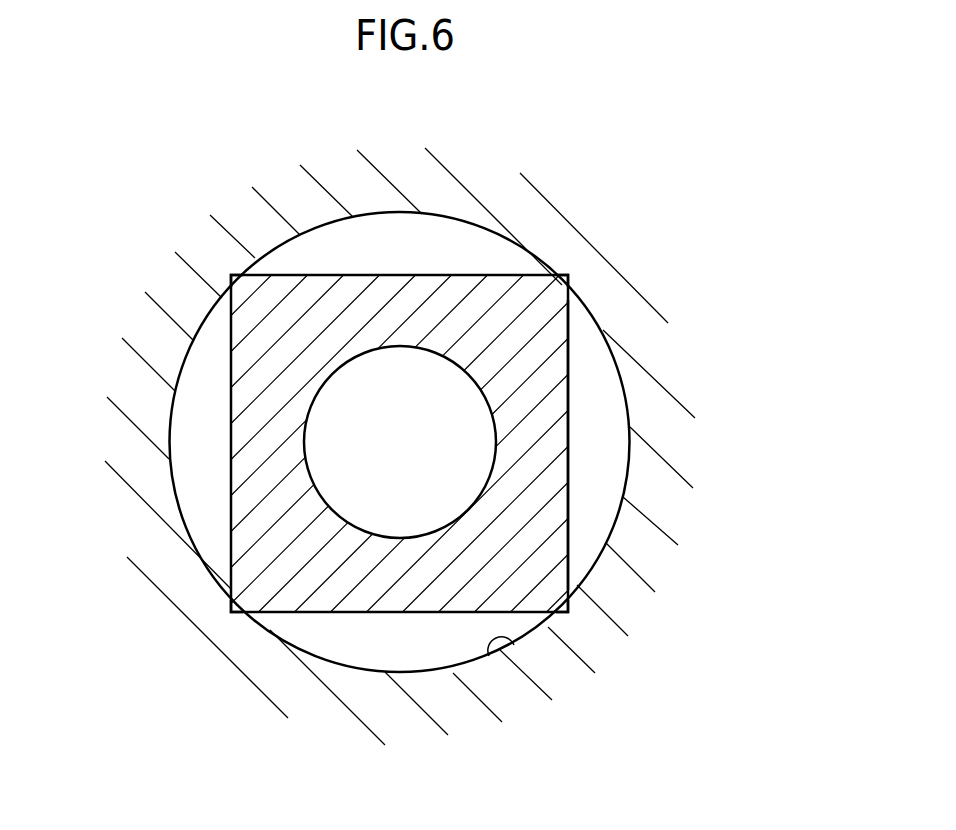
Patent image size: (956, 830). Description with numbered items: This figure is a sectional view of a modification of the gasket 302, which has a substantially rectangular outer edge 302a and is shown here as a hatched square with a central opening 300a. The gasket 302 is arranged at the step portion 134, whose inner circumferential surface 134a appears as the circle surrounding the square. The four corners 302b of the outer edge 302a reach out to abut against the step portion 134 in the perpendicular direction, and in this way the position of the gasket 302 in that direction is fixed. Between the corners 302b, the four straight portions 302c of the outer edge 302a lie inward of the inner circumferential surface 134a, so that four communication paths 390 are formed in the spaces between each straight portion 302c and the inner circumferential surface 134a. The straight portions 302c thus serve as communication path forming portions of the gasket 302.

The communication path 390 is at (332, 237).
The gasket 302 is at (523, 297).
The outer edge 302a is at (753, 500).
The corner 302b is at (577, 272).
The straight portion 302c is at (402, 273).
The central hole / fiber 300a is at (432, 455).
The step portion 134 is at (447, 178).
The inner circumferential surface 134a is at (507, 651).